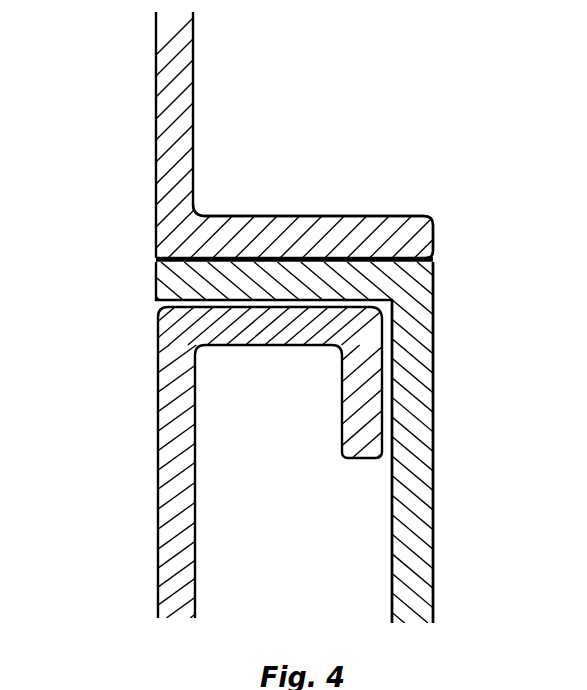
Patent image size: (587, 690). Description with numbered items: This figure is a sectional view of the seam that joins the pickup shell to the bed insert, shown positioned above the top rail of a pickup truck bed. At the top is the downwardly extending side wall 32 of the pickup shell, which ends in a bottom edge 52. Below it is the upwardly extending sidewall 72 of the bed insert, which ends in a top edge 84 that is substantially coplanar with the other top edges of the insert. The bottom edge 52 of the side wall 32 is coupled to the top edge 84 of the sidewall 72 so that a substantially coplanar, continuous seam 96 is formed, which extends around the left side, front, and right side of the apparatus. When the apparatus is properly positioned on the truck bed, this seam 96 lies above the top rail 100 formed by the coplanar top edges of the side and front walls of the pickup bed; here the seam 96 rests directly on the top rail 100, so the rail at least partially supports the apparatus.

The side wall 32 is at (165, 40).
The bottom edge 52 is at (158, 256).
The seam 96 is at (158, 260).
The top edge 84 is at (158, 265).
The sidewall 72 is at (427, 557).
The top rail 100 is at (165, 338).